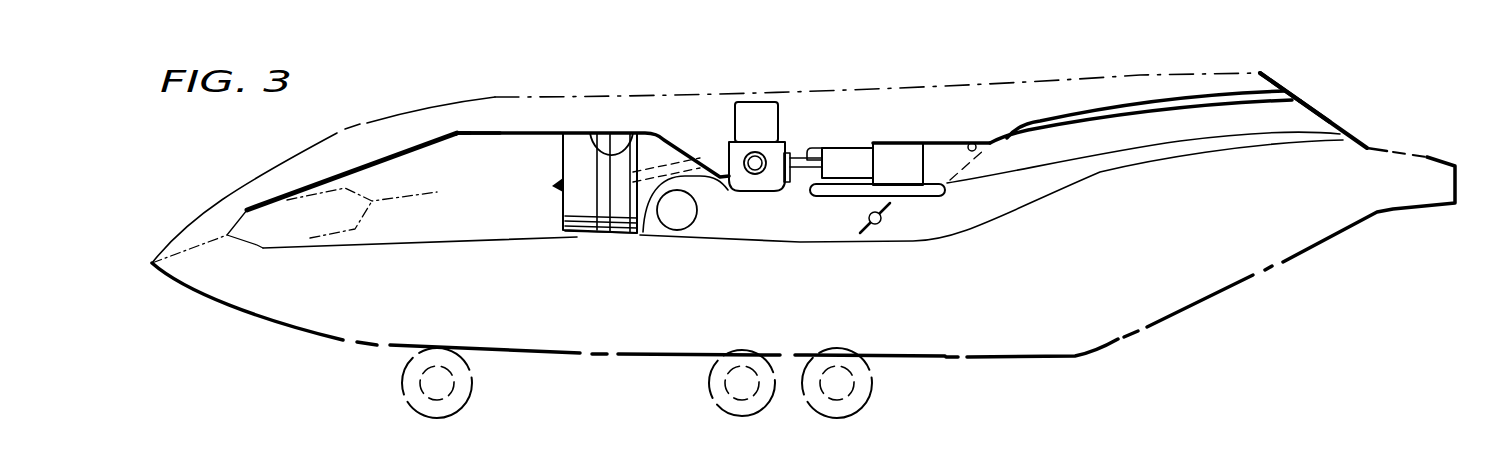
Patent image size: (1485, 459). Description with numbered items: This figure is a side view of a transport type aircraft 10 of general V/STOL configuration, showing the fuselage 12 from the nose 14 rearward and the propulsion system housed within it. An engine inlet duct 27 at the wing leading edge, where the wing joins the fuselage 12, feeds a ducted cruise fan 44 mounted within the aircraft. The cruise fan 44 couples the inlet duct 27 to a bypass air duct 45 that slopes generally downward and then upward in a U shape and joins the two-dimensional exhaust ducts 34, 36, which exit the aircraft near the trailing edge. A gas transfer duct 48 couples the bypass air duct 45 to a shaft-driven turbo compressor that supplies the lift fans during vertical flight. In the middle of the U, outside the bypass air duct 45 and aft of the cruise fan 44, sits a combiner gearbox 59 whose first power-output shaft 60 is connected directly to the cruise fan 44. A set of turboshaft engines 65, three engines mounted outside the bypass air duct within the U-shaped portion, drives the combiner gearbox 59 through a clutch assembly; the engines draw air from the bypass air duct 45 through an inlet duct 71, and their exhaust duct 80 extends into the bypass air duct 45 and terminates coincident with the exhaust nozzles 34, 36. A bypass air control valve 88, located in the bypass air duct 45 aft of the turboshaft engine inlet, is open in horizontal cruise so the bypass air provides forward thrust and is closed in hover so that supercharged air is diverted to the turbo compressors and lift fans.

The aircraft 10 is at (158, 170).
The fuselage 12 is at (275, 164).
The nose 14 is at (153, 263).
The engine inlet duct 27 is at (483, 143).
The two-dimensional exhaust duct 34 is at (1292, 110).
The two-dimensional exhaust duct 36 is at (1315, 111).
The ducted cruise fan 44 is at (613, 140).
The bypass air duct 45 is at (592, 152).
The gas transfer duct 48 is at (695, 214).
The combiner gearbox 59 is at (772, 108).
The first power-output shaft 60 is at (650, 250).
The first set of turboshaft engines 65 is at (862, 157).
The inlet duct 71 is at (797, 176).
The exhaust duct 80 is at (975, 143).
The bypass air control valve 88 is at (877, 240).